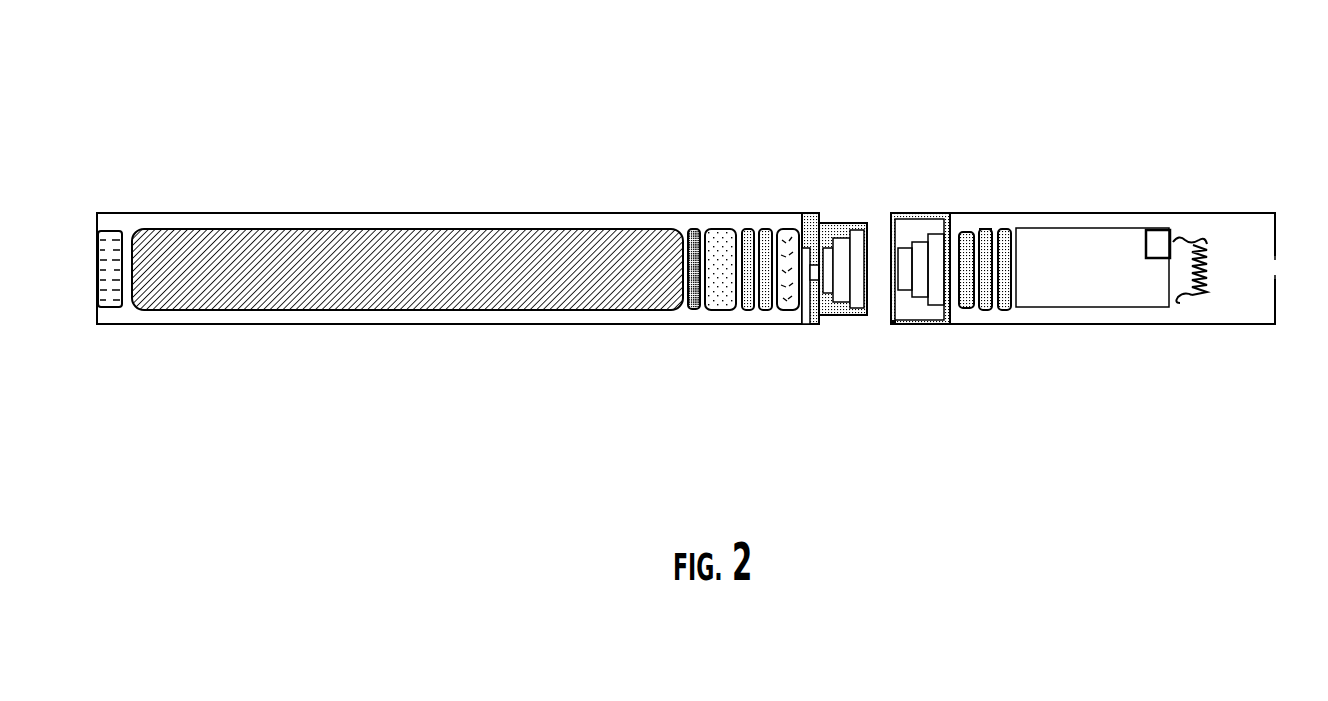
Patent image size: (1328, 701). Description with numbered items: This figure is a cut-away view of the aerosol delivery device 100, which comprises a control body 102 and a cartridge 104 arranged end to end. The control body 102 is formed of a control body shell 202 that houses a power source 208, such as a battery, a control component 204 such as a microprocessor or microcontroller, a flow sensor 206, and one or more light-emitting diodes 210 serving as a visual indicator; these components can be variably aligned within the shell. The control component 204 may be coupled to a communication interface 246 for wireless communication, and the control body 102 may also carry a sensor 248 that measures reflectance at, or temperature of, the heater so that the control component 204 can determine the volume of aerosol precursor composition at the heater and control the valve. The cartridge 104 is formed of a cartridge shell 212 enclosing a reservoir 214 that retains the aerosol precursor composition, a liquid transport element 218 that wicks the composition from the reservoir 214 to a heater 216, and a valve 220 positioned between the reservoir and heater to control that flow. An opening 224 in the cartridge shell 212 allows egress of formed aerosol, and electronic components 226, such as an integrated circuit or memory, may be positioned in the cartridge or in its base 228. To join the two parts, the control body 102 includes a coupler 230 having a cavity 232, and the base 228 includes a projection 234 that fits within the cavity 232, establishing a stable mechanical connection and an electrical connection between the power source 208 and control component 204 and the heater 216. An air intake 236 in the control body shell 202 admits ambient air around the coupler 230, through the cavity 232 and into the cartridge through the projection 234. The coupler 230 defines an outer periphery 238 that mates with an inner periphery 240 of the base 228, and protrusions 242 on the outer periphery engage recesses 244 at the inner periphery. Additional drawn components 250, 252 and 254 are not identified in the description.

The aerosol delivery device 100 is at (578, 52).
The control body 102 is at (363, 150).
The cartridge 104 is at (1082, 130).
The control body shell 202 is at (458, 293).
The control component 204 is at (702, 302).
The flow sensor 206 is at (803, 332).
The power source 208 is at (407, 301).
The light-emitting diode 210 is at (130, 302).
The cartridge shell 212 is at (1083, 309).
The reservoir 214 is at (1092, 294).
The heater 216 is at (1212, 334).
The liquid transport element 218 is at (1241, 306).
The valve 220 is at (1138, 213).
The opening 224 is at (1234, 224).
The electronic components 226 is at (992, 295).
The base 228 is at (972, 312).
The coupler 230 is at (844, 271).
The cavity 232 is at (813, 214).
The projection 234 is at (943, 239).
The air intake 236 is at (788, 247).
The outer periphery 238 is at (864, 241).
The inner periphery 240 is at (888, 212).
The protrusion 242 is at (850, 360).
The recess 244 is at (930, 318).
The communication interface 246 is at (671, 237).
The sensor 248 is at (724, 238).
The plate 250 is at (741, 314).
The plate 252 is at (1026, 241).
The plate edge 254 is at (1009, 187).